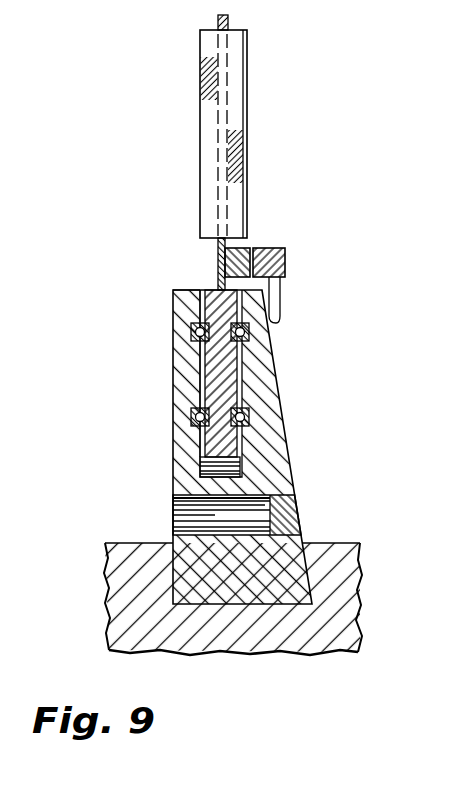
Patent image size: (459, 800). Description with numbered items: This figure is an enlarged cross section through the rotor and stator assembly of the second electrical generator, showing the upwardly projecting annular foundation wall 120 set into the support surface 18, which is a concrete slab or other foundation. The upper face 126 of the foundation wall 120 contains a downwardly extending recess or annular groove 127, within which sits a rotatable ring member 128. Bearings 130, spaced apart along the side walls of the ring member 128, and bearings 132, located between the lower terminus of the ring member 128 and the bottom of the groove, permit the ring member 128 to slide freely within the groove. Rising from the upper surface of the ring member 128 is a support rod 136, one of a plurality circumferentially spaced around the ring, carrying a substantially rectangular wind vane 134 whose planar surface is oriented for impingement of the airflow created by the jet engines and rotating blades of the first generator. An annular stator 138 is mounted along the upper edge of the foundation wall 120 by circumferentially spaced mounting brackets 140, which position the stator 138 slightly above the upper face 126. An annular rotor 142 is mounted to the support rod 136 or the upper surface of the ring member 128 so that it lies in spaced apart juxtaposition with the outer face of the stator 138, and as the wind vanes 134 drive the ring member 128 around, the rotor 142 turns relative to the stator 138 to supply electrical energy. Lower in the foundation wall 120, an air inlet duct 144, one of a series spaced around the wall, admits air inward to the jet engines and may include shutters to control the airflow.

The support surface 18 is at (350, 543).
The foundation wall 120 is at (275, 455).
The upper face 126 is at (183, 290).
The annular groove 127 is at (201, 290).
The ring member 128 is at (240, 385).
The bearings 130 is at (193, 340).
The bearings 132 is at (203, 465).
The wind vanes 134 is at (235, 100).
The support rods 136 is at (229, 16).
The annular stator 138 is at (287, 257).
The mounting brackets 140 is at (276, 299).
The annular rotor 142 is at (250, 246).
The air inlet ducts 144 is at (287, 515).